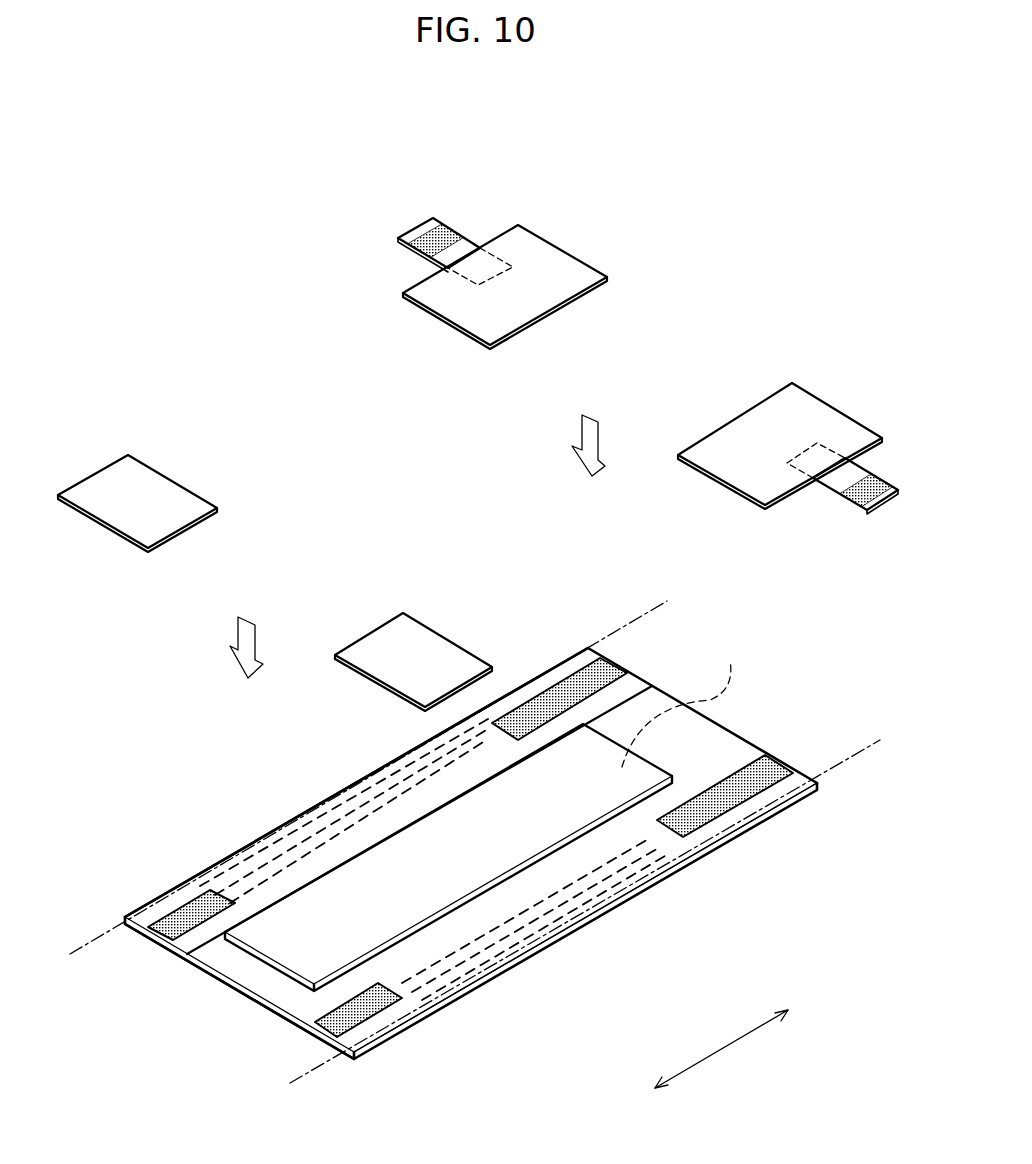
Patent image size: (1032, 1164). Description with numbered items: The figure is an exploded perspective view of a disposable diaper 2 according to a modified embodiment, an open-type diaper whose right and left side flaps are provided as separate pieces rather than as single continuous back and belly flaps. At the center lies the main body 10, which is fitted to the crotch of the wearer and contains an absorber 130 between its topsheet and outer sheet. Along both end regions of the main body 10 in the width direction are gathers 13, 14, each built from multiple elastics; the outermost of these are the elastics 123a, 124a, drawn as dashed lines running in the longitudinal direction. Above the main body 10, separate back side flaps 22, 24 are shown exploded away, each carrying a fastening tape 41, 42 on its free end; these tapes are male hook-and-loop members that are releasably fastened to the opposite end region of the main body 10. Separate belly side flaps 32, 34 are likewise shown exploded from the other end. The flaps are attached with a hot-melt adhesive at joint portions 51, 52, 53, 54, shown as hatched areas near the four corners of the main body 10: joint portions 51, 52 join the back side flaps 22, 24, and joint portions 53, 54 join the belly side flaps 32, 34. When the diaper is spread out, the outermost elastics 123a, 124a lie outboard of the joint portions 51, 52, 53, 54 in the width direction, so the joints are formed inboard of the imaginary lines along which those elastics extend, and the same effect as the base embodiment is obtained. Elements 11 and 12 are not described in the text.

The disposable diaper 2 is at (238, 203).
The main body 10 is at (358, 915).
The substrate 11 is at (720, 726).
The bottom side surface 12 is at (240, 985).
The gather 13 is at (628, 843).
The gather 14 is at (376, 805).
The back side flap 22 is at (808, 425).
The back side flap 24 is at (538, 278).
The belly side flap 32 is at (427, 660).
The belly side flap 34 is at (143, 497).
The fastening tape 41 is at (835, 512).
The fastening tape 42 is at (487, 262).
The joint portion 51 is at (768, 765).
The joint portion 52 is at (612, 673).
The joint portion 53 is at (378, 1010).
The joint portion 54 is at (180, 908).
The elastic 123a is at (540, 935).
The elastic 124a is at (247, 848).
The absorber 130 is at (694, 697).